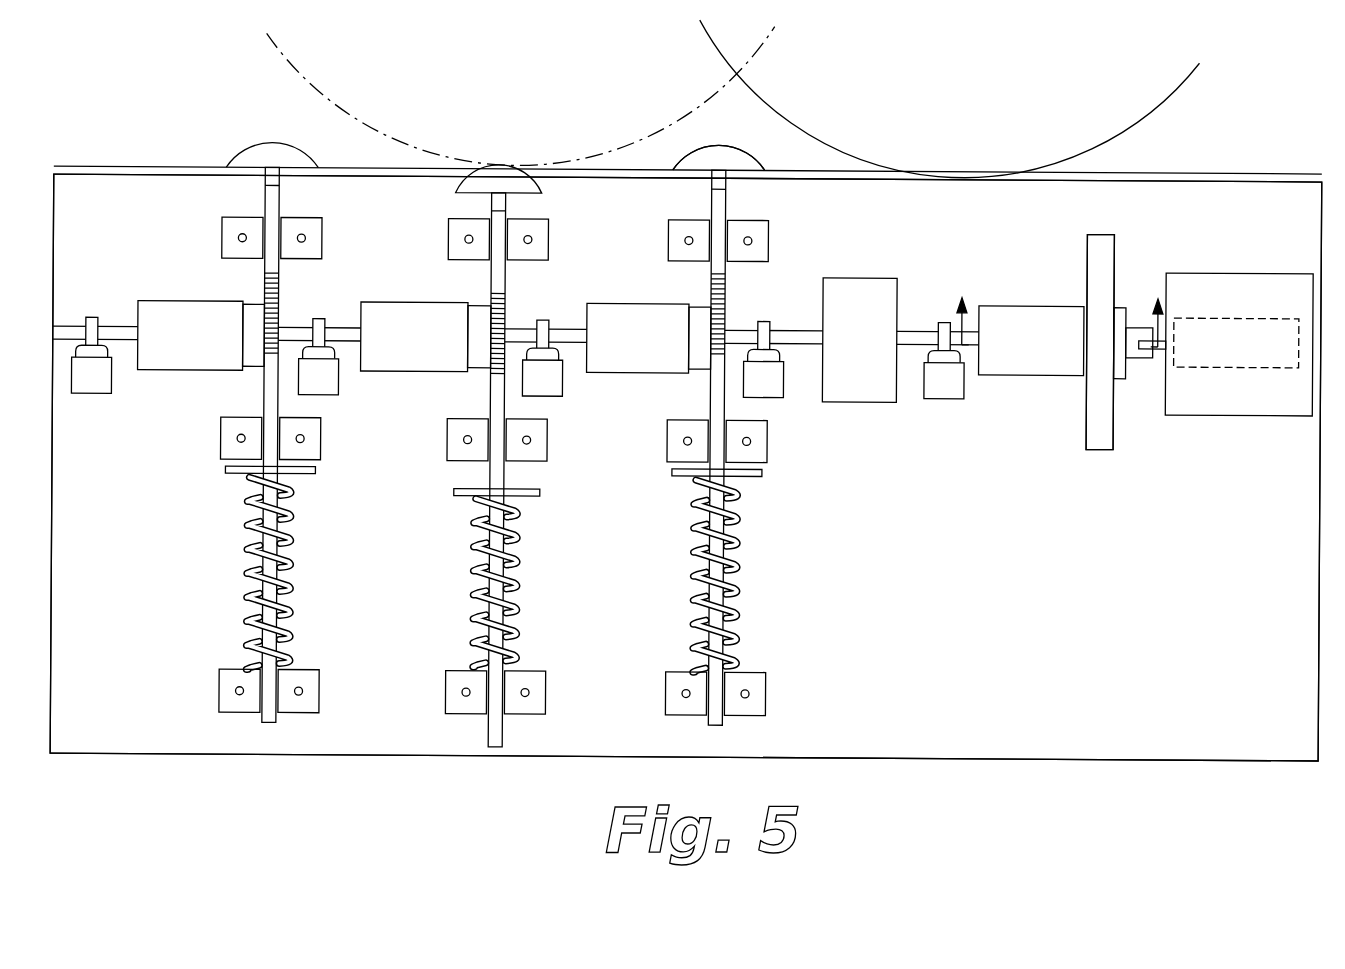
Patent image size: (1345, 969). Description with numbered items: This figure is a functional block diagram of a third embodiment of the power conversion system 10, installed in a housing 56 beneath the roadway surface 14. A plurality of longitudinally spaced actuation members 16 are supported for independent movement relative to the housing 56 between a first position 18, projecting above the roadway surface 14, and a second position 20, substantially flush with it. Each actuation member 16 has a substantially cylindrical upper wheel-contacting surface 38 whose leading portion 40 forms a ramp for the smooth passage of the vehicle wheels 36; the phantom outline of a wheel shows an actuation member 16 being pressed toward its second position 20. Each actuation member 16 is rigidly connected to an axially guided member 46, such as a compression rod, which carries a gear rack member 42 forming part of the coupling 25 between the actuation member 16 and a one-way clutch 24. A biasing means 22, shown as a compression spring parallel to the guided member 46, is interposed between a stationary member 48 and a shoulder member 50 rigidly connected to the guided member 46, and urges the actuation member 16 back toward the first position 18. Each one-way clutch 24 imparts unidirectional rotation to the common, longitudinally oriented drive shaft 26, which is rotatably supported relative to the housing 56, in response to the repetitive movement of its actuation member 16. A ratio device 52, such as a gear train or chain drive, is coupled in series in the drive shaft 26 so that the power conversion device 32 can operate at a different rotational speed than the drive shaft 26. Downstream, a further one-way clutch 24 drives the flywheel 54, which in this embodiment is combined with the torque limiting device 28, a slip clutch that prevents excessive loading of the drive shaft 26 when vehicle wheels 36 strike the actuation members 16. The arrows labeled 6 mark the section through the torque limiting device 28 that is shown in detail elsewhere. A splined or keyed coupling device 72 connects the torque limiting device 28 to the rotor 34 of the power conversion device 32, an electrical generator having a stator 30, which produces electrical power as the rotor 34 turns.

The power conversion system 10 is at (222, 778).
The roadway surface 14 is at (1162, 170).
The actuation member 16 is at (262, 147).
The first position 18 is at (735, 148).
The second position 20 is at (539, 193).
The biasing means 22 is at (248, 570).
The one-way clutch 24 is at (180, 304).
The coupling 25 is at (280, 320).
The drive shaft 26 is at (803, 345).
The torque limiting device 28 is at (1097, 447).
The stator 30 is at (1220, 316).
The power conversion device 32 is at (1205, 414).
The rotor 34 is at (1163, 360).
The vehicle wheels 36 is at (1148, 108).
The wheel-contacting surface 38 is at (505, 168).
The leading portion 40 is at (763, 170).
The gear rack member 42 is at (280, 300).
The guided member 46 is at (264, 193).
The stationary member 48 is at (322, 690).
The shoulder member 50 is at (312, 476).
The ratio device 52 is at (858, 278).
The flywheel 54 is at (1090, 418).
The housing 56 is at (1268, 758).
The section line 6- 6 is at (1056, 303).
The coupling device 72 is at (1128, 328).